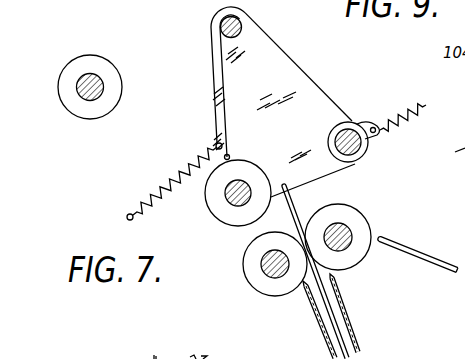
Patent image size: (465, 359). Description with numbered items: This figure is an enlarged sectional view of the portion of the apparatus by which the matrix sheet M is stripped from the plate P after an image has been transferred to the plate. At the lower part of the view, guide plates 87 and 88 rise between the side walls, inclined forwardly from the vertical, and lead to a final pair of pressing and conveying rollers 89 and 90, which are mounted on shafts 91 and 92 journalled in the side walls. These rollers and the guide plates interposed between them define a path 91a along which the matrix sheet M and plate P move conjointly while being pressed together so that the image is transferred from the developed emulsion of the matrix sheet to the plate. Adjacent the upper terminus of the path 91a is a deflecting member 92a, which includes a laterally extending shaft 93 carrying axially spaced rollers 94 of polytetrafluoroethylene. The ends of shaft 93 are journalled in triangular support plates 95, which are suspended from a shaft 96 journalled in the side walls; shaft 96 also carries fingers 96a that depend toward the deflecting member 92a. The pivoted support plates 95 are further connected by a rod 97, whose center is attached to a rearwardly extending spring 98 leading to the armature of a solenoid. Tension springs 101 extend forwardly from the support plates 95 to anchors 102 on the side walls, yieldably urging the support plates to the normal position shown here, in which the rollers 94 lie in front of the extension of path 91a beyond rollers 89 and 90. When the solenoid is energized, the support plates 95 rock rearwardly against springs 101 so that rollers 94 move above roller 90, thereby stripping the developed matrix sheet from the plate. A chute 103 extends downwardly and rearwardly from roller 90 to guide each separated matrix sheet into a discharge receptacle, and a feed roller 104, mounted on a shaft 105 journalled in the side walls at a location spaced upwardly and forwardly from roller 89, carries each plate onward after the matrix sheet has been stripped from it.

The guide plate 87 is at (323, 324).
The guide plate 88 is at (343, 313).
The pressing and conveying roller 89 is at (253, 244).
The pressing and conveying roller 90 is at (346, 213).
The shaft 91 is at (247, 270).
The path 91a is at (351, 334).
The shaft 92 is at (353, 233).
The deflecting member 92a is at (208, 229).
The shaft 93 is at (246, 181).
The roller 94 is at (207, 194).
The triangular support plate 95 is at (319, 95).
The shaft 96 is at (241, 30).
The finger 96a is at (228, 82).
The rod 97 is at (357, 124).
The spring 98 is at (394, 116).
The tension spring 101 is at (197, 161).
The anchor 102 is at (128, 219).
The chute 103 is at (420, 250).
The feed roller 104 is at (111, 72).
The shaft 105 is at (107, 90).
The matrix sheet M is at (297, 218).
The plate P is at (321, 303).